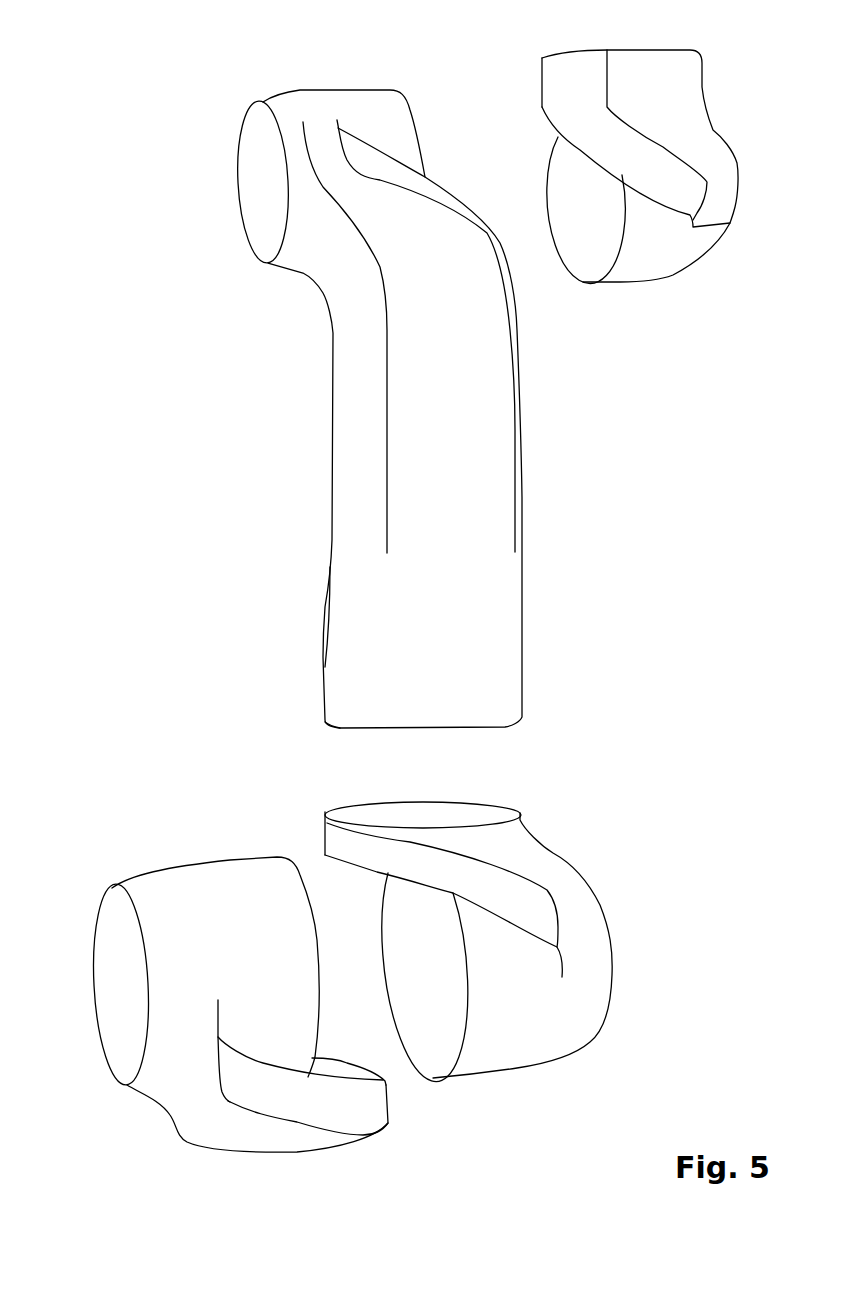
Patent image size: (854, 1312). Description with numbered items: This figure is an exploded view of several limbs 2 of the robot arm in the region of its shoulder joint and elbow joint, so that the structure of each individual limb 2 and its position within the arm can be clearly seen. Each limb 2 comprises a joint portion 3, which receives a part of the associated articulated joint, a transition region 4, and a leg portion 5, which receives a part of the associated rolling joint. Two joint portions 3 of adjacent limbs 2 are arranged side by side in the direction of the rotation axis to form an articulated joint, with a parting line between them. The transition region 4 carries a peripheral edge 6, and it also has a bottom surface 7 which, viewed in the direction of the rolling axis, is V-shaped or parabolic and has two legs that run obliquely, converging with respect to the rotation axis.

The limb 2 is at (498, 442).
The joint portion 3 is at (363, 117).
The transition region 4 is at (325, 238).
The leg portion 5 is at (503, 603).
The peripheral edge 6 is at (448, 185).
The bottom surface 7 is at (353, 1078).